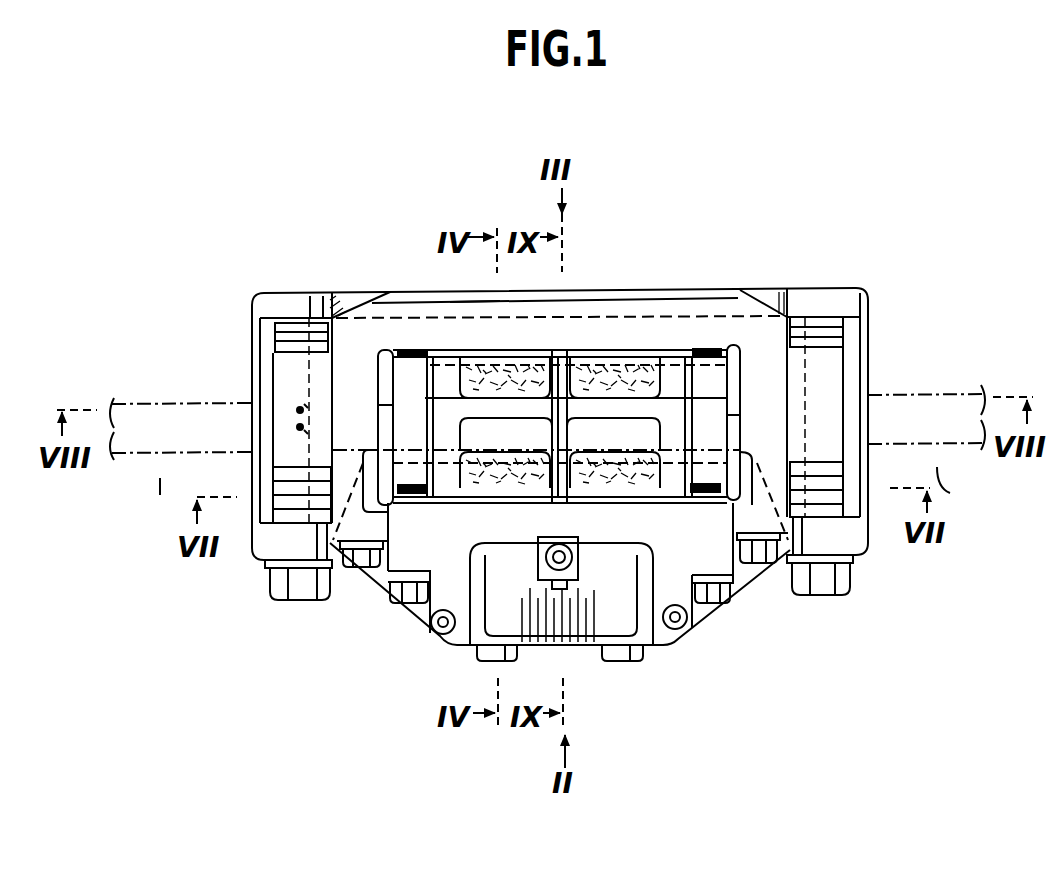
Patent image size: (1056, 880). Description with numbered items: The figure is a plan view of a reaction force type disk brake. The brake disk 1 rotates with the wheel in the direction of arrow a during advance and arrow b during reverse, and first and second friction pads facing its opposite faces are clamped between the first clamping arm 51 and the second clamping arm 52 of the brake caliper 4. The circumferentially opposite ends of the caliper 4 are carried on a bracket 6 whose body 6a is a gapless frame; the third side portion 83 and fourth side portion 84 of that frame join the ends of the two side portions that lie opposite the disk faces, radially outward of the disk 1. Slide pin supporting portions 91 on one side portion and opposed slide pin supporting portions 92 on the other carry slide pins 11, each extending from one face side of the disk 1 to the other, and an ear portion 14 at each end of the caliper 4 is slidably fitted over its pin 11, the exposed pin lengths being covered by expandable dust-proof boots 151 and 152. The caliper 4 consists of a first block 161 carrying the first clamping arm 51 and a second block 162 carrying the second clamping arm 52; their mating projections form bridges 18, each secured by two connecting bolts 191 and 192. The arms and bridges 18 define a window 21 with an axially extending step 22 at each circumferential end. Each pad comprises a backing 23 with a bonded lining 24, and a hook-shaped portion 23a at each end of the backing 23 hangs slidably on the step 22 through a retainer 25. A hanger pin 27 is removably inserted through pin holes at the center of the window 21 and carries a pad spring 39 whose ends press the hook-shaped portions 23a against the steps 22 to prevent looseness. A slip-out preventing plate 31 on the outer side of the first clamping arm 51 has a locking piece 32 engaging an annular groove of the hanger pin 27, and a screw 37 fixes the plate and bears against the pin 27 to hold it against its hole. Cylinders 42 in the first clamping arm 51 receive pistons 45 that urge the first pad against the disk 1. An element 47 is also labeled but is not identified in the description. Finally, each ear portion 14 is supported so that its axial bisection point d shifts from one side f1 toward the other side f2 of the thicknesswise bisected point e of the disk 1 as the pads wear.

The brake disk 1 is at (153, 403).
The brake caliper 4 is at (696, 286).
The cover plate edge 47 is at (472, 300).
The second clamping arm 52 is at (667, 294).
The bracket 6 is at (805, 287).
The body of the bracket 6a is at (358, 293).
The third side portion 83 is at (257, 385).
The fourth side portion 84 is at (866, 375).
The slide pin supporting portions 92 is at (270, 300).
The slide pin supporting portions 91 is at (270, 543).
The slide pins 11 is at (282, 602).
The ear portion 14 is at (288, 368).
The dust-proof boot 152 is at (325, 333).
The dust-proof boot 151 is at (287, 482).
The second block 162 is at (589, 287).
The first block 161 is at (723, 604).
The bridge 18 is at (378, 372).
The connecting bolts 191 is at (357, 568).
The connecting bolts 192 is at (410, 604).
The window 21 is at (378, 410).
The step 22 is at (378, 355).
The backing 23 is at (510, 360).
The hook-shaped portion 23a is at (402, 348).
The lining 24 is at (597, 380).
The retainer 25 is at (370, 460).
The hanger pin 27 is at (583, 485).
The slip-out preventing plate 31 is at (537, 570).
The locking piece 32 is at (636, 342).
The screw 37 is at (554, 586).
The pad spring 39 is at (480, 403).
The cylinders 42 is at (487, 662).
The piston 45 is at (487, 498).
The first clamping arm 51 is at (583, 647).
The point of bisection of the ear portion d is at (297, 411).
The thicknesswise bisected point of the brake disk e is at (297, 428).
The one side f1 is at (306, 406).
The other side f2 is at (306, 432).
The arrow a is at (117, 478).
The arrow b is at (913, 467).